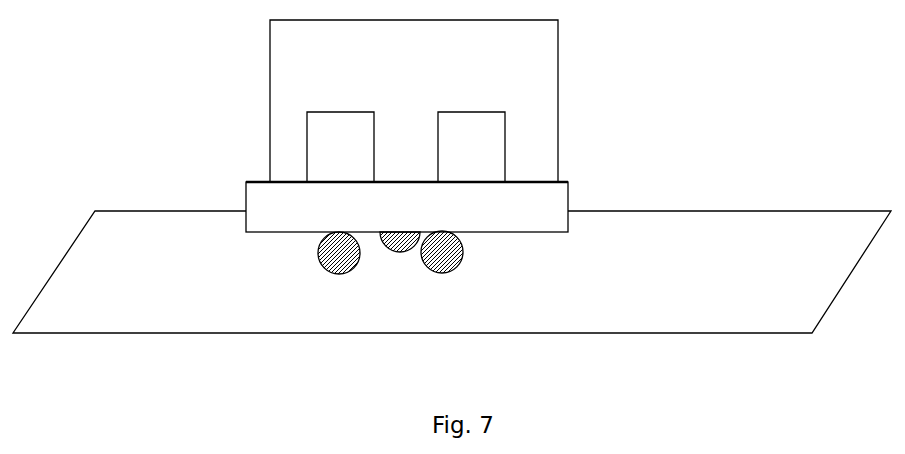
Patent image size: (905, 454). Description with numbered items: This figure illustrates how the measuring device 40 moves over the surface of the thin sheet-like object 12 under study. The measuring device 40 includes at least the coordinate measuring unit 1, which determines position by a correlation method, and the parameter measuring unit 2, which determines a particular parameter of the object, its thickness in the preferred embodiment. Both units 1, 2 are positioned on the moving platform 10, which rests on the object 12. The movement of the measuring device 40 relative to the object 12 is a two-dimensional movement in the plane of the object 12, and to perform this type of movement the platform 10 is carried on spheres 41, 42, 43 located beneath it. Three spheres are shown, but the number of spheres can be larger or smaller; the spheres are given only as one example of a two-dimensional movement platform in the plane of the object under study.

The coordinate measuring unit 1 is at (340, 147).
The parameter measuring unit 2 is at (471, 147).
The moving platform 10 is at (407, 207).
The object 12 is at (452, 272).
The measuring device 40 is at (414, 101).
The sphere 41 is at (327, 261).
The sphere 42 is at (398, 261).
The sphere 43 is at (442, 270).